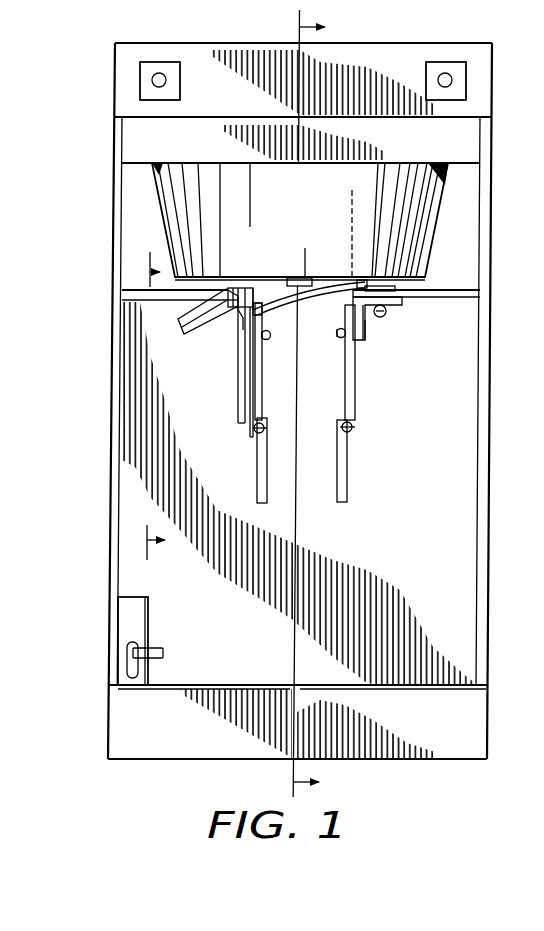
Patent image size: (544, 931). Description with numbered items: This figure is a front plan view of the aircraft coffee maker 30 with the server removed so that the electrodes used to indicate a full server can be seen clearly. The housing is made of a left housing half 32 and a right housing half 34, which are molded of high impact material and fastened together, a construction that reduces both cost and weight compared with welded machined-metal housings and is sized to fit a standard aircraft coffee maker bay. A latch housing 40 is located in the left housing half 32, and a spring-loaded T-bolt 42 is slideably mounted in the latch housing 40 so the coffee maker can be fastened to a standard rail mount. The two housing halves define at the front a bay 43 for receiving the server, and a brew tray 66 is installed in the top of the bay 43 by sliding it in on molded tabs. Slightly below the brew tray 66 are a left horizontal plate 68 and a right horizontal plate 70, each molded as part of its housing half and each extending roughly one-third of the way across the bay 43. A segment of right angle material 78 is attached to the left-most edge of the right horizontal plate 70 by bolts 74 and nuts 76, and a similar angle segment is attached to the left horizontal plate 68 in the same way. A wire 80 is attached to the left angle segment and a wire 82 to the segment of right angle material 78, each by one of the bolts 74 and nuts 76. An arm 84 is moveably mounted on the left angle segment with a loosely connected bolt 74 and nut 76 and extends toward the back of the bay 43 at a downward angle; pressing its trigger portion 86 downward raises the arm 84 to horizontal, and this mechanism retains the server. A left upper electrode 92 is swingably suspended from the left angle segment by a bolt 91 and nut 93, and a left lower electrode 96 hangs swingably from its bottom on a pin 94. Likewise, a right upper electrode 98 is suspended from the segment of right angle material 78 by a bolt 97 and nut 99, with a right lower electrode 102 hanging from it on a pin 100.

The aircraft coffee maker 30 is at (145, 772).
The left housing half 32 is at (117, 702).
The right housing half 34 is at (445, 740).
The latch housing 40 is at (128, 610).
The spring-loaded T-bolt 42 is at (157, 648).
The bay 43 is at (210, 577).
The brew tray 66 is at (173, 217).
The left horizontal plate 68 is at (162, 303).
The right horizontal plate 70 is at (440, 299).
The bolts 74 is at (393, 288).
The nuts 76 is at (393, 313).
The segment of right angle material 78 is at (360, 320).
The wire 80 is at (312, 296).
The wire 82 is at (361, 280).
The arm 84 is at (238, 383).
The trigger portion 86 is at (178, 320).
The bolt 91 is at (240, 328).
The left upper electrode 92 is at (262, 383).
The nut 93 is at (275, 338).
The pin 94 is at (252, 431).
The left lower electrode 96 is at (257, 470).
The bolt 97 is at (366, 333).
The right upper electrode 98 is at (345, 386).
The nut 99 is at (338, 337).
The pin 100 is at (355, 431).
The right lower electrode 102 is at (348, 465).